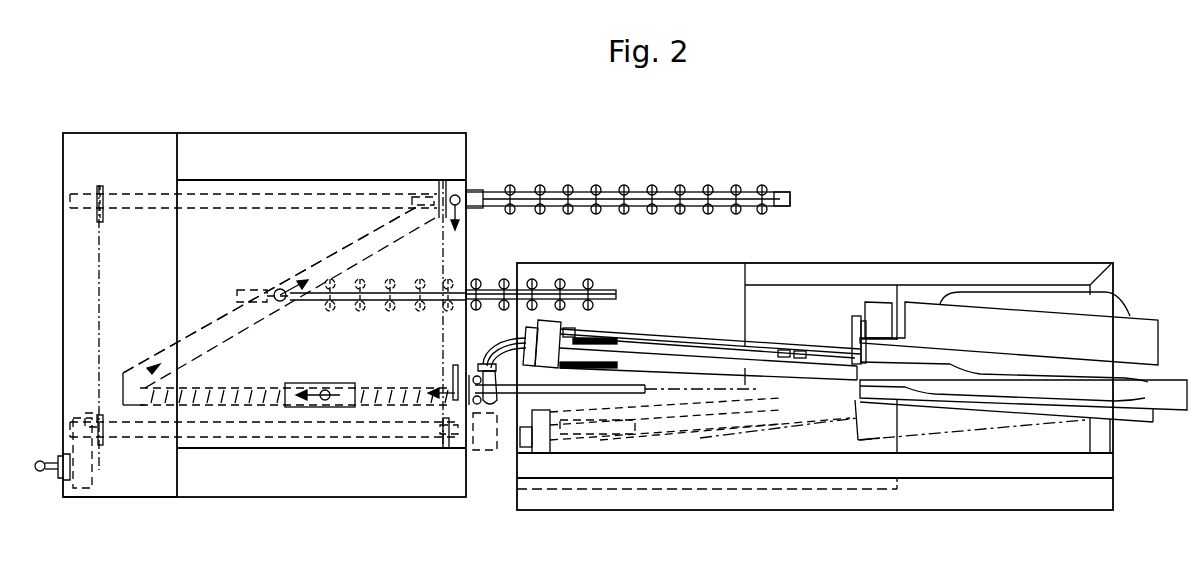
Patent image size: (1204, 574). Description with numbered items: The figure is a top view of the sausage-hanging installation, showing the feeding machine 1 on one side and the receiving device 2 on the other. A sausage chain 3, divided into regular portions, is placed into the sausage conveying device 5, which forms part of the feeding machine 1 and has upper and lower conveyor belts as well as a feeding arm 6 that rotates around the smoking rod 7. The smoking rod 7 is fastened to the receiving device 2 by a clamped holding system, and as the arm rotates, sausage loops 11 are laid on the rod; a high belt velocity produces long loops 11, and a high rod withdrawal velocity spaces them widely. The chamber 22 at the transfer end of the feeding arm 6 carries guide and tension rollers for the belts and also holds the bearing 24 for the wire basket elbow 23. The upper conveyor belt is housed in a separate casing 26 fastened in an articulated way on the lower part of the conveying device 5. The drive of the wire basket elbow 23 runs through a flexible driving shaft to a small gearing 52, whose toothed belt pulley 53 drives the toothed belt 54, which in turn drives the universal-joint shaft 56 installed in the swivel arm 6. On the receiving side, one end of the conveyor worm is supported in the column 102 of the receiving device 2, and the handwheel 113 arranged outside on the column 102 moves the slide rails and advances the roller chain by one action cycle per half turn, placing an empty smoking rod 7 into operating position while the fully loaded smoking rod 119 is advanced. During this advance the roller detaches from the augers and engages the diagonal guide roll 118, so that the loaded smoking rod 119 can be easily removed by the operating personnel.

The feeding machine 1 is at (895, 160).
The receiving device 2 is at (378, 88).
The sausage chain 3 is at (493, 412).
The sausage conveying device 5 is at (1007, 330).
The feeding arm 6 is at (694, 360).
The smoking rod 7 is at (632, 393).
The sausage loops 11 is at (628, 190).
The chamber 22 is at (609, 338).
The wire basket elbow 23 is at (502, 346).
The bearing 24 is at (547, 326).
The casing 26 is at (930, 375).
The small gearing 52 is at (878, 308).
The toothed belt pulley 53 is at (852, 323).
The toothed belt 54 is at (861, 343).
The universal-joint shaft 56 is at (660, 342).
The column 102 is at (131, 498).
The handwheel 113 is at (42, 472).
The diagonal guide roll 118 is at (337, 259).
The loaded smoking rod 119 is at (779, 192).